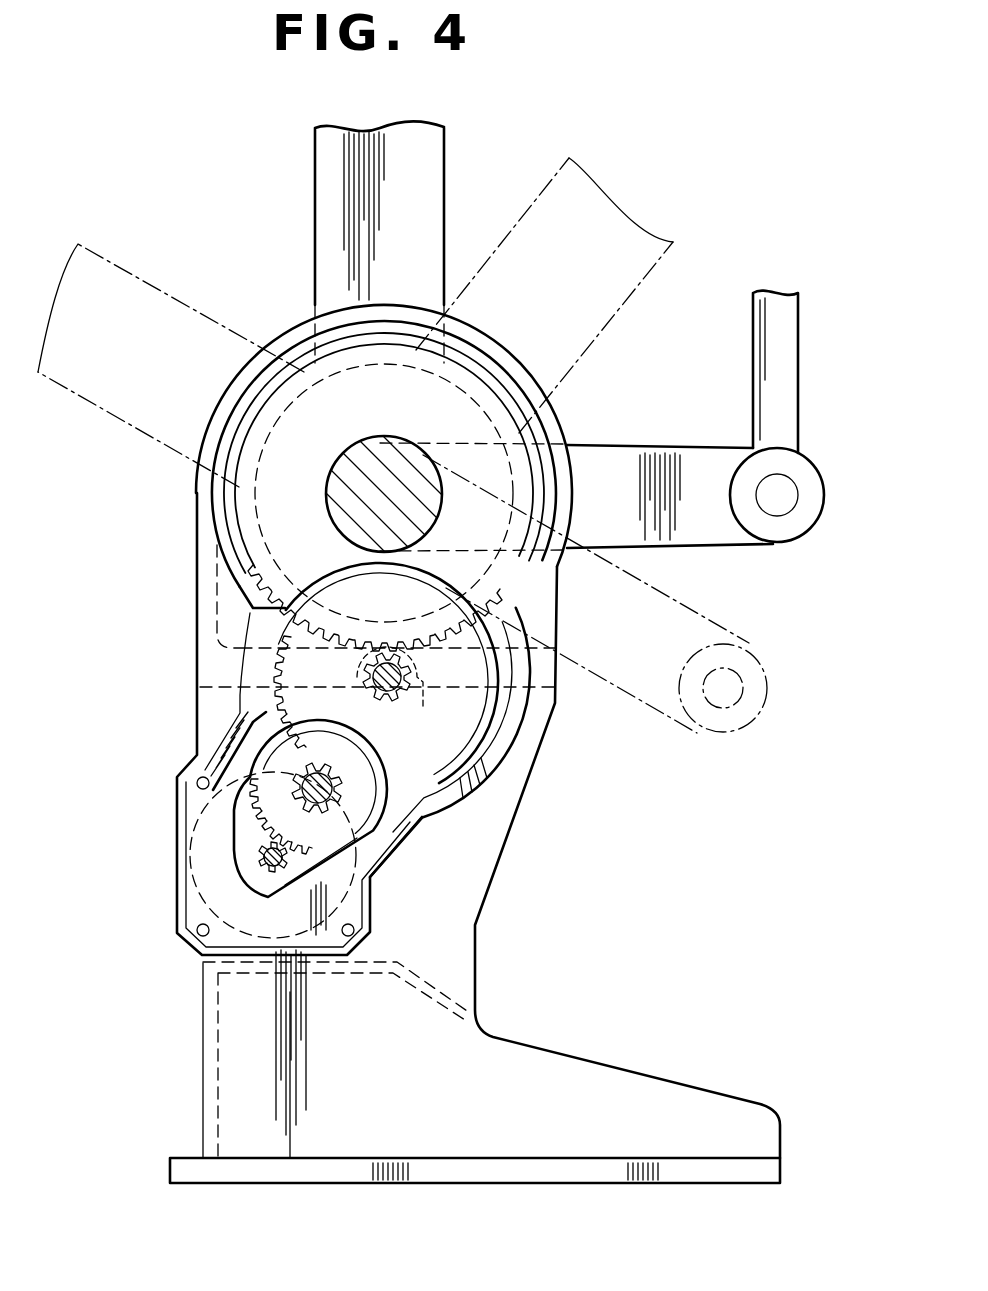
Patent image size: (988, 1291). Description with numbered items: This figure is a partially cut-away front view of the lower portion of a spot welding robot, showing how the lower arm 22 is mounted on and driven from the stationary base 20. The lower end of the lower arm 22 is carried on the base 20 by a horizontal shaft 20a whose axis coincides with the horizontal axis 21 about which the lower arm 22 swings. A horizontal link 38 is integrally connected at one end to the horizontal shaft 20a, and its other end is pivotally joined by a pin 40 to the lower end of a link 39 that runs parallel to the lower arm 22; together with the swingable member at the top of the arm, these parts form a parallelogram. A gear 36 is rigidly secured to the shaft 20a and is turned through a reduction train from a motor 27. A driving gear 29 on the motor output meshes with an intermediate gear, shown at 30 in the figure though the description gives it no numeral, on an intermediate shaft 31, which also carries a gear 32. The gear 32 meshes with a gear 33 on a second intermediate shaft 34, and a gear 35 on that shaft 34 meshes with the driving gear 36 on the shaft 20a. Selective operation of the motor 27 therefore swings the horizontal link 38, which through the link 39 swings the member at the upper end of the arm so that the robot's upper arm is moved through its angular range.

The stationary base 20 is at (508, 823).
The horizontal shaft 20a is at (373, 450).
The horizontal axis 21 is at (378, 492).
The lower arm 22 is at (325, 216).
The motor 27 is at (200, 855).
The driving gear 29 is at (272, 872).
The ring housing 30 is at (374, 866).
The intermediate shaft 31 is at (314, 804).
The gear 32 is at (395, 835).
The gear 33 is at (494, 718).
The second intermediate shaft 34 is at (365, 670).
The gear 35 is at (401, 695).
The gear 36 is at (240, 590).
The horizontal link 38 is at (669, 447).
The link 39 is at (787, 380).
The pin 40 is at (783, 503).